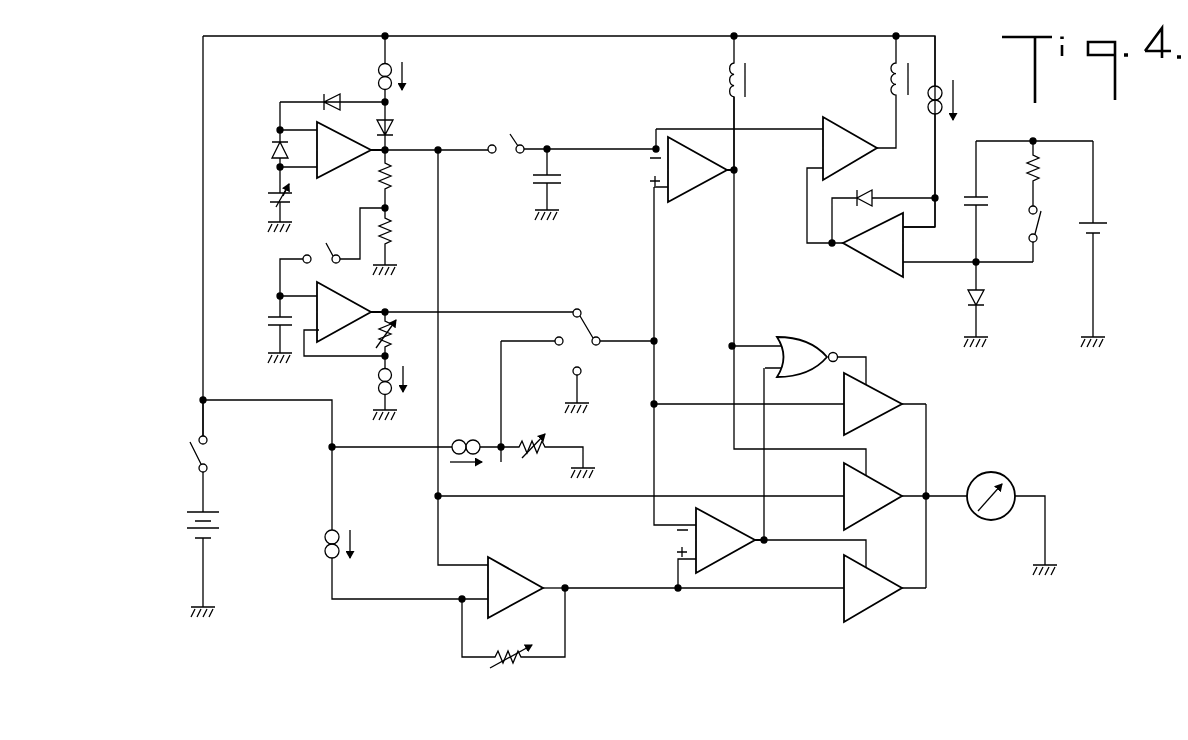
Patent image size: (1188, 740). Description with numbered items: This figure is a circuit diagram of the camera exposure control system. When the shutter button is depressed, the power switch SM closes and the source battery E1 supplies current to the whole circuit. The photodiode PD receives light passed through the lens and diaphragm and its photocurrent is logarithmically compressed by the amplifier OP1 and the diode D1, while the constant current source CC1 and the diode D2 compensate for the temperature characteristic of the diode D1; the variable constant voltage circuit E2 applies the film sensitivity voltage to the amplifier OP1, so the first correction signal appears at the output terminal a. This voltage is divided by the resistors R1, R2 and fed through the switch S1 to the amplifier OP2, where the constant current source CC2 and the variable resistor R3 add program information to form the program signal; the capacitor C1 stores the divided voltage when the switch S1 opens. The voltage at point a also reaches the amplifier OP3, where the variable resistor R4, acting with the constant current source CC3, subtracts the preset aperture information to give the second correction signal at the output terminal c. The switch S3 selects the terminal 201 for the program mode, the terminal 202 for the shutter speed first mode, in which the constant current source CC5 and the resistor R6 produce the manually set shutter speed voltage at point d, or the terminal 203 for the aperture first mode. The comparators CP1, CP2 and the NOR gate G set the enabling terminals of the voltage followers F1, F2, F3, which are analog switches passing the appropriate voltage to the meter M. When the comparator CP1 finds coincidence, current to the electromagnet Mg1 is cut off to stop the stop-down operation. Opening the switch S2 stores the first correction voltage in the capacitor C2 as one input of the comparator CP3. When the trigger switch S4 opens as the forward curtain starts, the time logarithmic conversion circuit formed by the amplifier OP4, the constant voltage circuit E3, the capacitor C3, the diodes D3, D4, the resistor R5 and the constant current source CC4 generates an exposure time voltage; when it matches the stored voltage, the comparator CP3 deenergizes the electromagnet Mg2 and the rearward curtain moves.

The constant current source CC1 is at (378, 79).
The diode D1 is at (322, 98).
The photodiode PD is at (270, 150).
The amplifier OP1 is at (351, 150).
The output terminal a is at (398, 148).
The diode D2 is at (398, 123).
The variable constant voltage circuit E2 is at (267, 196).
The resistor R1 is at (378, 177).
The resistor R2 is at (393, 238).
The switch S1 is at (332, 252).
The capacitor C1 is at (270, 316).
The amplifier OP2 is at (344, 319).
The variable resistor R3 is at (391, 338).
The constant current source CC2 is at (378, 381).
The power switch SM is at (212, 460).
The source battery E1 is at (185, 523).
The constant current source CC3 is at (324, 546).
The constant current source CC5 is at (470, 440).
The point d is at (499, 414).
The resistor R6 is at (532, 443).
The terminal 201 is at (585, 300).
The switch S3 is at (617, 337).
The terminal 202 is at (558, 345).
The terminal 203 is at (582, 373).
The switch S2 is at (547, 133).
The capacitor C2 is at (562, 184).
The comparator CP1 is at (692, 165).
The electromagnet Mg1 is at (722, 80).
The electromagnet Mg2 is at (888, 77).
The comparator CP3 is at (842, 180).
The amplifier OP4 is at (932, 245).
The diode D4 is at (870, 196).
The constant current source CC4 is at (946, 90).
The capacitor C3 is at (982, 195).
The resistor R5 is at (1040, 178).
The trigger switch S4 is at (1028, 227).
The constant voltage circuit E3 is at (1105, 234).
The diode D3 is at (987, 298).
The NOR gate G is at (799, 361).
The voltage follower F1 is at (790, 404).
The voltage follower F2 is at (702, 496).
The voltage follower F3 is at (802, 581).
The meter M is at (986, 471).
The amplifier OP3 is at (526, 587).
The output terminal C is at (565, 583).
The variable resistor R4 is at (520, 641).
The comparator CP2 is at (720, 540).